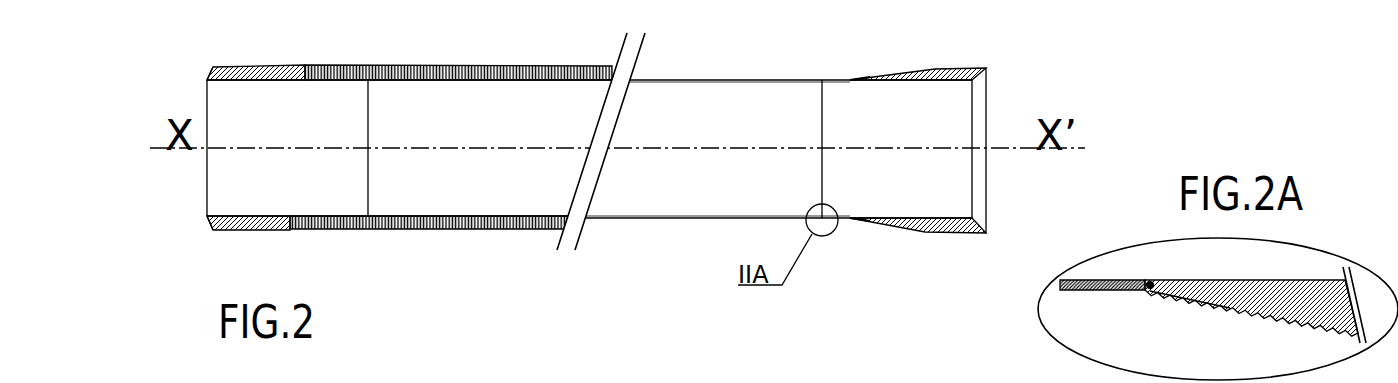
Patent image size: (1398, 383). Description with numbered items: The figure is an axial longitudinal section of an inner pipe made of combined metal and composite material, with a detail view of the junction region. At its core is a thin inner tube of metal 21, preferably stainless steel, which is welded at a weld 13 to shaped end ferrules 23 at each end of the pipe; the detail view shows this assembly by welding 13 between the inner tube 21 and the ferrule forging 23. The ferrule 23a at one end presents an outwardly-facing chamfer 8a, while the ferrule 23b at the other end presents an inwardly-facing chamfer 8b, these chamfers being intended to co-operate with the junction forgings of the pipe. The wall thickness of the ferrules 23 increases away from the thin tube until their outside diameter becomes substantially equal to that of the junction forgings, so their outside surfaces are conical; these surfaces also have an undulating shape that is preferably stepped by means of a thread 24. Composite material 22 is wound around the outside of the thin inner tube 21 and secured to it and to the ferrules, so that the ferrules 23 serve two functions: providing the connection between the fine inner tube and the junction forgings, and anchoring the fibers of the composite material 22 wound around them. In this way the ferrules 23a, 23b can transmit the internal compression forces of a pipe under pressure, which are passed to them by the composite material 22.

In FIG. 2, the outwardly-facing chamfer 8a is at (207, 78).
In FIG. 2, the inwardly-facing chamfer 8b is at (981, 75).
In FIG. 2, the thin inner tube of metal 21 is at (733, 80).
In FIG. 2A, the thin inner tube of metal 21 is at (1091, 291).
In FIG. 2, the composite material 22 is at (392, 66).
In FIG. 2, the shaped end ferrules 23 is at (596, 131).
In FIG. 2A, the shaped end ferrules 23 is at (1298, 320).
In FIG. 2, the ferrule 23a is at (250, 82).
In FIG. 2, the ferrule 23b is at (929, 69).
In FIG. 2, the thread 24 is at (868, 77).
In FIG. 2A, the thread 24 is at (1211, 304).
In FIG. 2A, the weld 13 is at (1150, 291).